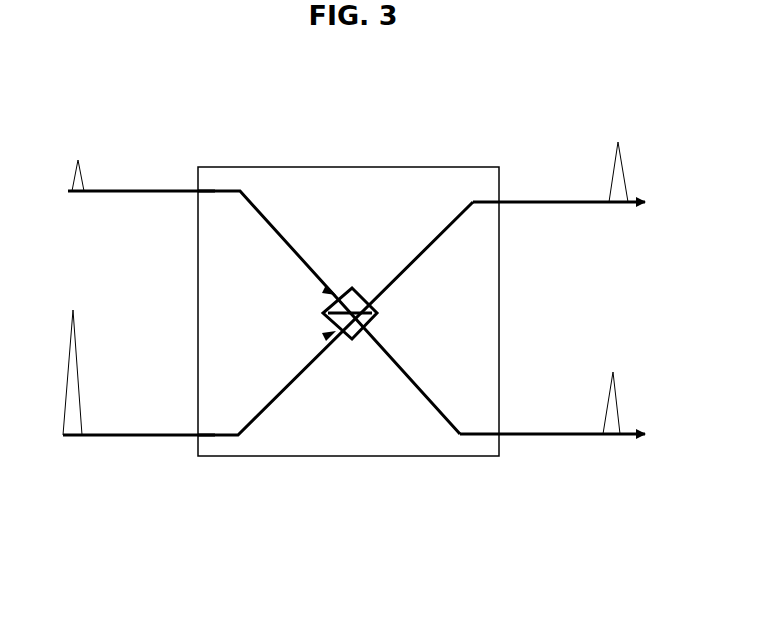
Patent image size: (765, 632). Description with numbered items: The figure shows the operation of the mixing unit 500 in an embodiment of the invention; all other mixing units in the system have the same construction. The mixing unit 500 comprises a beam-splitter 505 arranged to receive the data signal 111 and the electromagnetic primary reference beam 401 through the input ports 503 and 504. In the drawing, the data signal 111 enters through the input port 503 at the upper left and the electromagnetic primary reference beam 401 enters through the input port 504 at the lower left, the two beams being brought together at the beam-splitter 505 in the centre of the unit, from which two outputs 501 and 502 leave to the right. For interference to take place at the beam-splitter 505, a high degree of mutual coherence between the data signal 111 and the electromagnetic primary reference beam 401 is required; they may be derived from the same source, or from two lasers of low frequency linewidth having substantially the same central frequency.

The data signal 111 is at (90, 148).
The electromagnetic primary reference beam 401 is at (87, 313).
The mixing unit 500 is at (265, 458).
The first output optical pulse signal 501 is at (598, 163).
The second output optical pulse signal 502 is at (585, 405).
The input port 503 is at (197, 187).
The input port 504 is at (198, 437).
The beam-splitter 505 is at (358, 345).